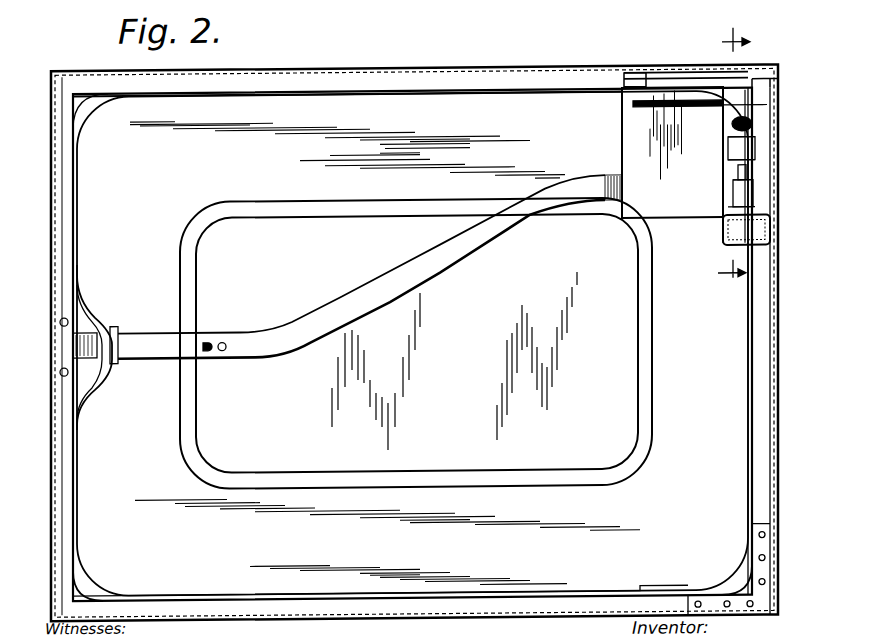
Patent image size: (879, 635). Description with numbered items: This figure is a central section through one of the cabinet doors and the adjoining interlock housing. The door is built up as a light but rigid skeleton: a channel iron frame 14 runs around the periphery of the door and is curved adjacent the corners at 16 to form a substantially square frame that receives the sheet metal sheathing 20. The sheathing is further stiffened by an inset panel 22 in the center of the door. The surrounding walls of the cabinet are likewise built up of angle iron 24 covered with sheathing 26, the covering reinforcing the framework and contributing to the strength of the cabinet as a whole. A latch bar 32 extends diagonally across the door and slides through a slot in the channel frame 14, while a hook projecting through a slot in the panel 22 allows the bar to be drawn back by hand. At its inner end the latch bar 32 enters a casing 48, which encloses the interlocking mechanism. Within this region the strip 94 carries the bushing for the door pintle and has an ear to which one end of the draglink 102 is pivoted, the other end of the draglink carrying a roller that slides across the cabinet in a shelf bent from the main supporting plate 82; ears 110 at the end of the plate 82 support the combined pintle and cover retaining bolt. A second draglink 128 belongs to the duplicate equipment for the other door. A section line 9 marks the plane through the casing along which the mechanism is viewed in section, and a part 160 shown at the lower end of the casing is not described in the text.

The section line 9- 9 is at (734, 157).
The channel iron frame 14 is at (77, 487).
The curved corners 16 is at (97, 582).
The sheathing 20 is at (430, 110).
The inset panel 22 is at (388, 230).
The angle iron 24 is at (578, 602).
The sheathing 26 is at (528, 615).
The latch bar 32 is at (371, 284).
The casing 48 is at (622, 124).
The main supporting plate 82 is at (766, 84).
The strip 94 is at (661, 80).
The draglink 102 is at (678, 116).
The ears 110 is at (735, 115).
The draglink 128 is at (645, 87).
The lower bracket 160 is at (725, 233).